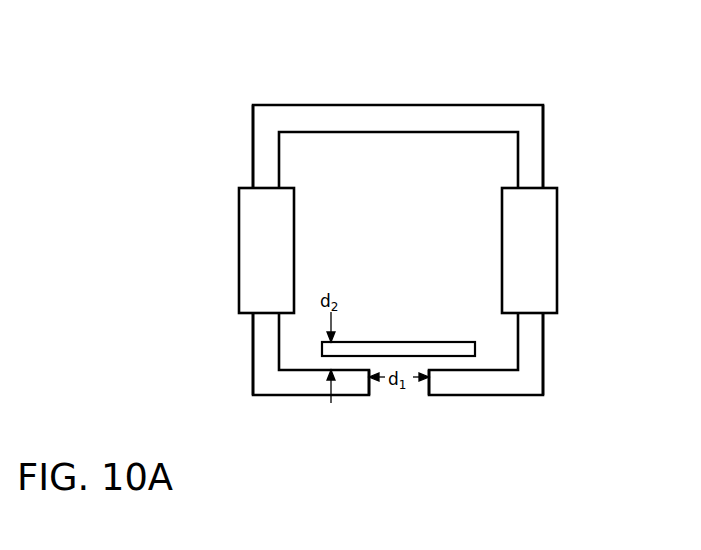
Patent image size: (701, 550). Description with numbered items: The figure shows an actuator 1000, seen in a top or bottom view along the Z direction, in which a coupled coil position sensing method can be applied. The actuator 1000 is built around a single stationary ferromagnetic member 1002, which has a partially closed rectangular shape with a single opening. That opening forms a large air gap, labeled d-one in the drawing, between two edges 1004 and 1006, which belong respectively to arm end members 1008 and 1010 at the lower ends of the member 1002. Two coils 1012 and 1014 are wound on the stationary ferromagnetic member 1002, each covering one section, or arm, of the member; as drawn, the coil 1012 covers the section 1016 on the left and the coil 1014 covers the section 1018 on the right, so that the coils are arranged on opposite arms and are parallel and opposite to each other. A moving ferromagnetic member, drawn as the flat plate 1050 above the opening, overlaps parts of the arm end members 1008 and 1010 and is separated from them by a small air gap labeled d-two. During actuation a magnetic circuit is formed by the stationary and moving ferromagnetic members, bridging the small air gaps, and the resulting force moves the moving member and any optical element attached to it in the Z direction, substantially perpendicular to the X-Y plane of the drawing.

The actuator 1000 is at (233, 33).
The stationary ferromagnetic member 1002 is at (509, 105).
The edge 1004 is at (365, 396).
The edge 1006 is at (435, 396).
The arm end member 1008 is at (262, 396).
The arm end member 1010 is at (540, 396).
The coil 1012 is at (239, 255).
The coil 1014 is at (557, 250).
The section (arm) 1016 is at (253, 160).
The section (arm) 1018 is at (543, 155).
The conductive plate 1050 is at (445, 342).